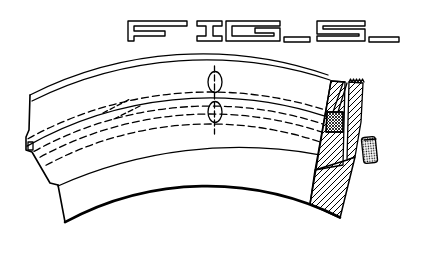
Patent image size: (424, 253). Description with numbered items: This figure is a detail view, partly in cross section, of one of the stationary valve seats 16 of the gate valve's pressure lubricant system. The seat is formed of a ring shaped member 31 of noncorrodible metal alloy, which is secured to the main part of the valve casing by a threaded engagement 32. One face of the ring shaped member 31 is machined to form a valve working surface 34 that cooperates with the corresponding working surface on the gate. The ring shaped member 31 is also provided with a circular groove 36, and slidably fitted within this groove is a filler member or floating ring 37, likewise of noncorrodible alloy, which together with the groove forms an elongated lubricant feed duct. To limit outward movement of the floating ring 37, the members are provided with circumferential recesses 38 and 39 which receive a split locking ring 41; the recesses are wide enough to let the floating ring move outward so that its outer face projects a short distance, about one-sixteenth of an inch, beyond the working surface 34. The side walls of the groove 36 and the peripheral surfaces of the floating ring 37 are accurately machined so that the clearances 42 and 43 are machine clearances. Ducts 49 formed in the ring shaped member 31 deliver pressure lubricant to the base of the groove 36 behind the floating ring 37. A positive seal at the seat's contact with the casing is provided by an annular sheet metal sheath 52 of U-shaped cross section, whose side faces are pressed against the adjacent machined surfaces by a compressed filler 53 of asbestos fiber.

The stationary valve seat 16 is at (265, 178).
The ring shaped member 31 is at (143, 192).
The threaded engagement 32 is at (326, 77).
The valve working surface 34 is at (107, 193).
The groove 36 is at (355, 181).
The filler member or floating ring 37 is at (167, 143).
The circumferential recess 38 is at (347, 123).
The circumferential recess 39 is at (352, 131).
The split locking ring 41 is at (347, 83).
The clearance 42 is at (63, 128).
The clearance 43 is at (222, 150).
The duct 49 is at (210, 83).
The annular sheath 52 is at (378, 158).
The compressed filler 53 is at (378, 145).